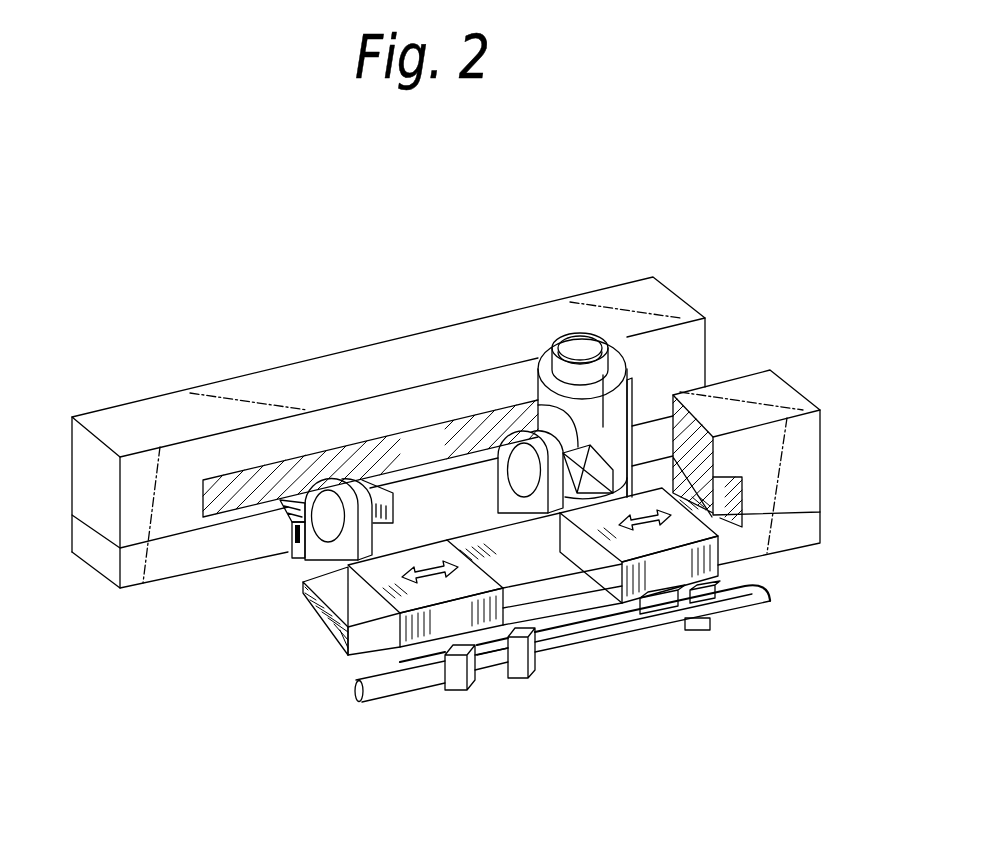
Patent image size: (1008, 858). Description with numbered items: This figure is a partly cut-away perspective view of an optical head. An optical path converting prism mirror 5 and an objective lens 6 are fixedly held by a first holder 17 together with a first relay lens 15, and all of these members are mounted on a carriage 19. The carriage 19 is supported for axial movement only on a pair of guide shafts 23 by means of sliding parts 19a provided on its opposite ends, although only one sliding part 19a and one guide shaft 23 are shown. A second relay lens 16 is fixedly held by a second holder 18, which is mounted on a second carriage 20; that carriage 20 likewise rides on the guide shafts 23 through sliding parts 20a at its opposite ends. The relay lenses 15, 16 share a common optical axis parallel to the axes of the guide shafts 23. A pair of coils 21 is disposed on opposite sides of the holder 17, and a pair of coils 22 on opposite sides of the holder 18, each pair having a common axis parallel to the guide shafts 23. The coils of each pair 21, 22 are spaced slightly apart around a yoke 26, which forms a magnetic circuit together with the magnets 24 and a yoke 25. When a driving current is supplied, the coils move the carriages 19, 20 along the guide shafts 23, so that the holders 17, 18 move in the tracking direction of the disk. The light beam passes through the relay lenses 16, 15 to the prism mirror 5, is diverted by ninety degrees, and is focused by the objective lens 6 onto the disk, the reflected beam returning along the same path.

The optical path converting prism mirror 5 is at (519, 460).
The objective lens 6 is at (590, 346).
The first relay lens 15 is at (493, 443).
The second relay lens 16 is at (333, 537).
The first holder 17 is at (640, 397).
The second holder 18 is at (300, 565).
The carriage 19 is at (757, 578).
The sliding part 19a is at (697, 630).
The carriage 20 is at (411, 690).
The sliding part 20a is at (522, 678).
The pair of coils 21 is at (413, 388).
The pair of coils 22 is at (290, 520).
The guide shaft 23 is at (378, 702).
The magnet 24 is at (224, 478).
The yoke 25 is at (783, 392).
The yoke 26 is at (813, 528).